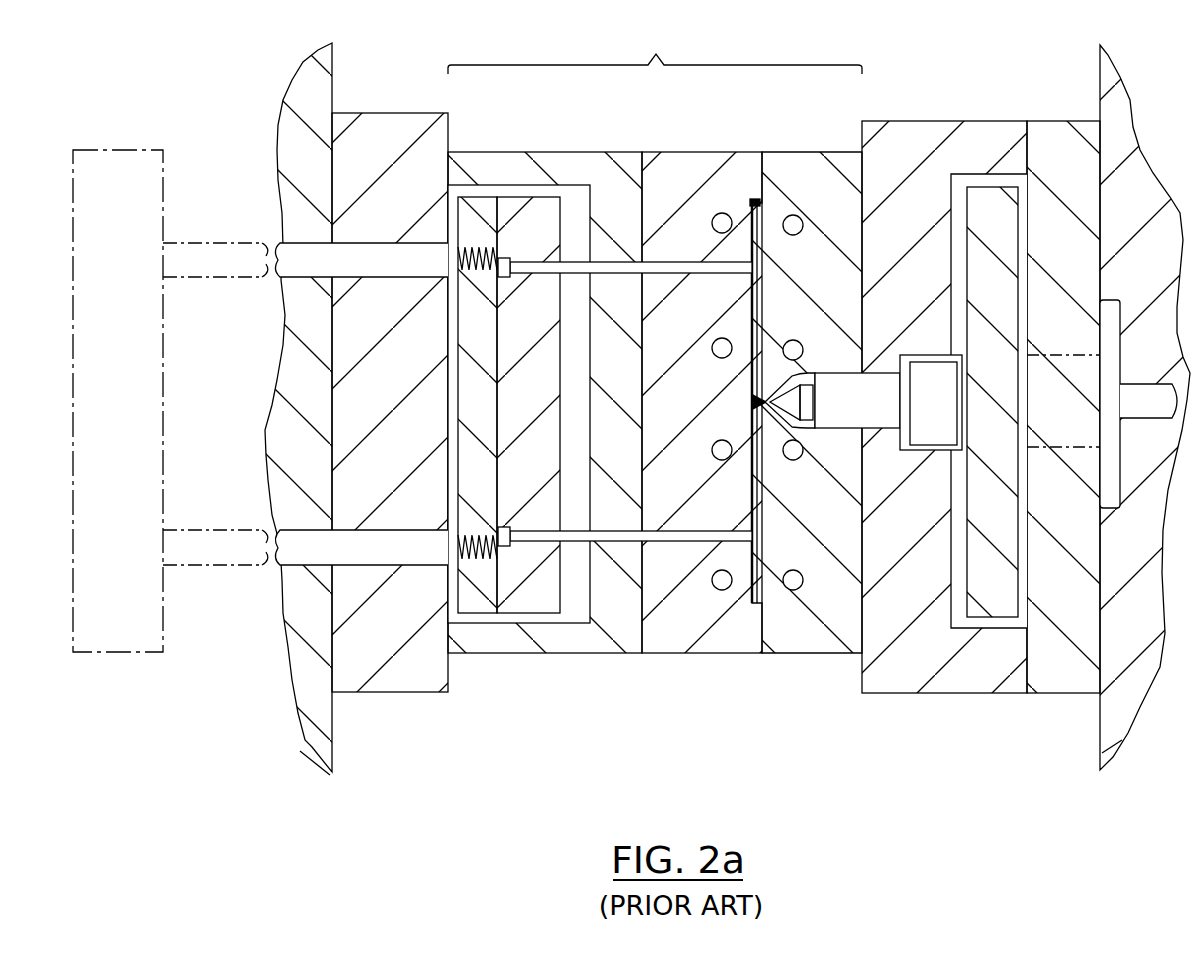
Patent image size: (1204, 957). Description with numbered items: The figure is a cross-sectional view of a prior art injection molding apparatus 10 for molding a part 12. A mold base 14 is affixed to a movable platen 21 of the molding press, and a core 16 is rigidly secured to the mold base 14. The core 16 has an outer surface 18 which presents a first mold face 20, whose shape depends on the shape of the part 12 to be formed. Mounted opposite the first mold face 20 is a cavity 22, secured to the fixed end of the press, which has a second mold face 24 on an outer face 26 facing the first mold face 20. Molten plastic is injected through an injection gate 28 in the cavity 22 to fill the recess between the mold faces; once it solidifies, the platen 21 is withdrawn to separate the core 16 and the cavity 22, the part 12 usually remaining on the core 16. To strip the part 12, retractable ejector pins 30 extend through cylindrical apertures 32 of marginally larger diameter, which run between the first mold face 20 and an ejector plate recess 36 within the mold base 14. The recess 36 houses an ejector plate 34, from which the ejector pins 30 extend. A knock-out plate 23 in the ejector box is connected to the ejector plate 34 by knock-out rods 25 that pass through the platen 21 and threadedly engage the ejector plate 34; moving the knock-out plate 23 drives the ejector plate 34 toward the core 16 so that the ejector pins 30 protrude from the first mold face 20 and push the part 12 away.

The injection molding apparatus 10 is at (655, 46).
The part 12 is at (753, 462).
The mold base 14 is at (545, 430).
The core 16 is at (652, 640).
The outer surface 18 is at (787, 425).
The first mold face 20 is at (765, 578).
The movable platen 21 is at (392, 674).
The cavity 22 is at (952, 672).
The knock-out plate 23 is at (133, 637).
The second mold face 24 is at (636, 401).
The knock-out rods 25 is at (205, 262).
The outer face 26 is at (762, 497).
The injection gate 28 is at (758, 395).
The ejector pins 30 is at (610, 424).
The cylindrical apertures 32 is at (586, 261).
The ejector plate 34 is at (505, 597).
The ejector plate recess 36 is at (575, 608).